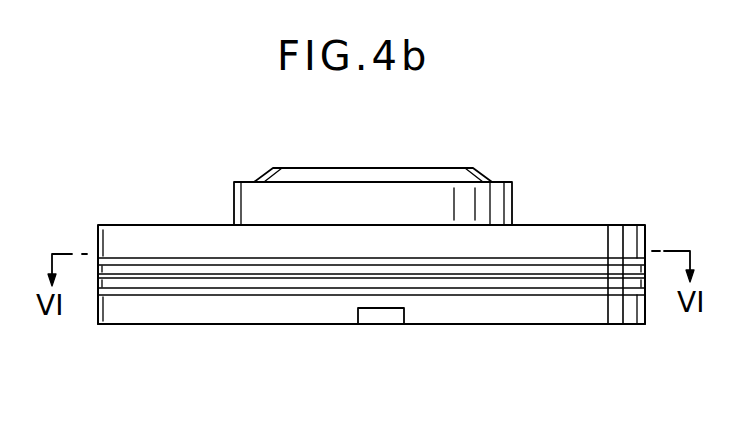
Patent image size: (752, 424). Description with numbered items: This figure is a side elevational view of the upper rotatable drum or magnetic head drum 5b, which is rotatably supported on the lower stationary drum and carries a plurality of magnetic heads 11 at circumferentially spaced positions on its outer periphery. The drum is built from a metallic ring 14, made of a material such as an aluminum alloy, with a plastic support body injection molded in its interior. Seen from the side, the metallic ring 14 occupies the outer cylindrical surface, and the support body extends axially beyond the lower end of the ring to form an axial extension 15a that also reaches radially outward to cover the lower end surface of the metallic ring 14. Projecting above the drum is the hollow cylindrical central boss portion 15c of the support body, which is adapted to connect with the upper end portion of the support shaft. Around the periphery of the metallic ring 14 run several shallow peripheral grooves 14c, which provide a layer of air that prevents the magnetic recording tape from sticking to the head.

The upper rotatable drum 5b is at (201, 218).
The magnetic heads 11 is at (385, 315).
The metallic ring 14 is at (622, 223).
The shallow peripheral grooves 14c is at (548, 288).
The axial extension 15a is at (493, 313).
The central boss portion 15c is at (508, 203).